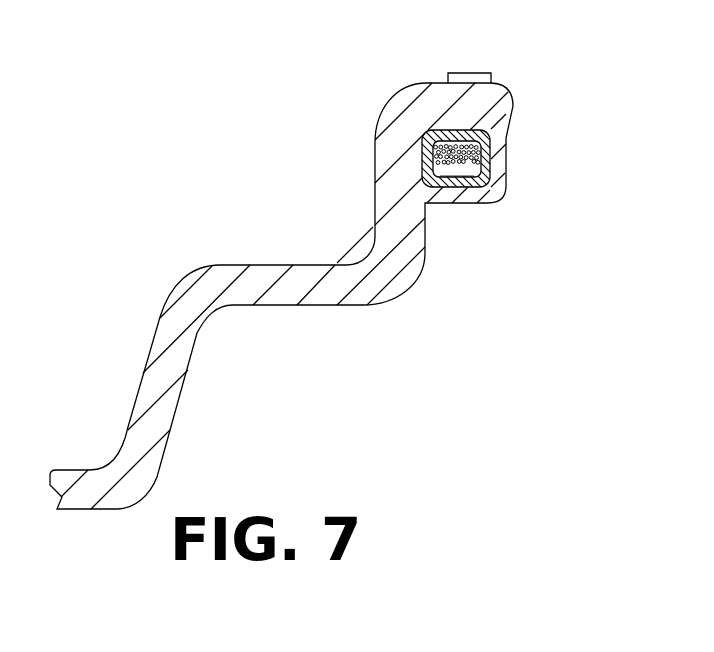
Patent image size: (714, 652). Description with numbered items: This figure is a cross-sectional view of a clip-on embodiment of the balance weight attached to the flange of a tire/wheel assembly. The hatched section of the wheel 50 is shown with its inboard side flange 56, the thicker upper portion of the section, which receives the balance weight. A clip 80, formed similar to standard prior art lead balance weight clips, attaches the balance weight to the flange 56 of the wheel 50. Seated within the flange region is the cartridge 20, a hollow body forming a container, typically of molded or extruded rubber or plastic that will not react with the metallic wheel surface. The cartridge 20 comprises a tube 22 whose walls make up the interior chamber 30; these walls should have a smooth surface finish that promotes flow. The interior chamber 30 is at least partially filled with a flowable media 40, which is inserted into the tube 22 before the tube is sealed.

The cartridge 20 is at (493, 163).
The tube 22 is at (455, 190).
The interior chamber 30 is at (473, 178).
The flowable media 40 is at (490, 145).
The wheel 50 is at (403, 283).
The inboard side flange 56 is at (422, 122).
The clip 80 is at (467, 73).